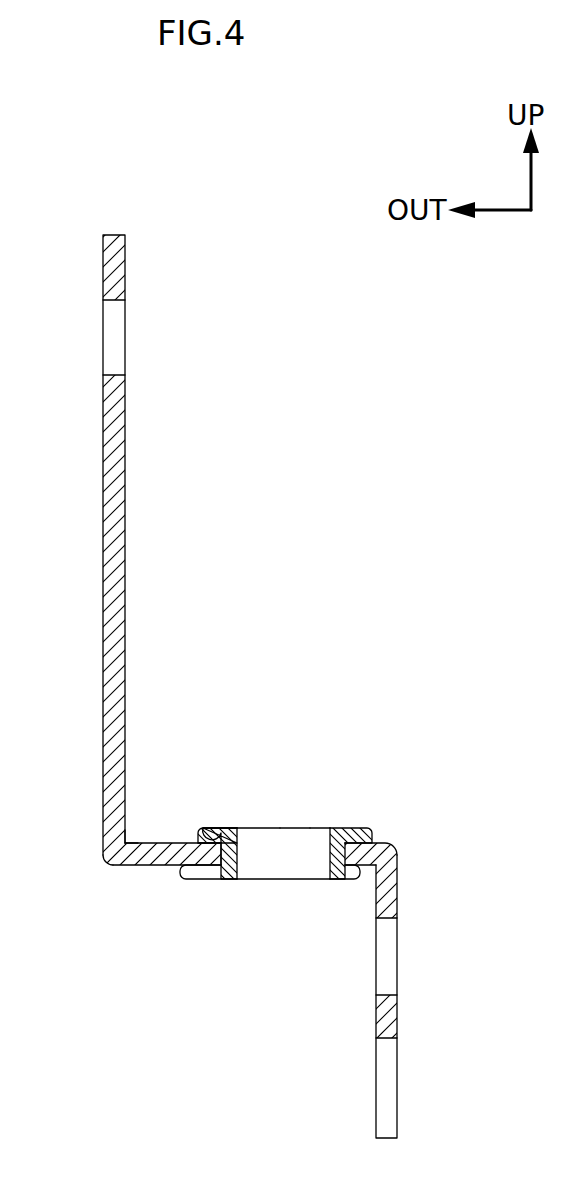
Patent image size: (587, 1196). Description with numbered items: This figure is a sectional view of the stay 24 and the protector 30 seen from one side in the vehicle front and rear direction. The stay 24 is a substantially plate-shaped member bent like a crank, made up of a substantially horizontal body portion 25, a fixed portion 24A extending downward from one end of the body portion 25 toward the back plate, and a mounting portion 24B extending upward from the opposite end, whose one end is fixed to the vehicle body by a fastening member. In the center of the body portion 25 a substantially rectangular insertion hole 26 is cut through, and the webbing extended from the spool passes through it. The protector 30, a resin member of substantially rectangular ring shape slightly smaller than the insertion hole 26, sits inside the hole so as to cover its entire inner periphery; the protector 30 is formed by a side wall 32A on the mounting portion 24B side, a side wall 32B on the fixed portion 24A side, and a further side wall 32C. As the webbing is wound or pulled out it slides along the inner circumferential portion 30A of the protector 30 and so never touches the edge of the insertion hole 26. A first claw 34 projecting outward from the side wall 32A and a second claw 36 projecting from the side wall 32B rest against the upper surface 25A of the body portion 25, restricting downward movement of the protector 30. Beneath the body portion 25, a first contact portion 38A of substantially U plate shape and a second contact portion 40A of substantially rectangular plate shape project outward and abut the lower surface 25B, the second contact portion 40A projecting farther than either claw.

The stay 24 is at (240, 295).
The fixed portion 24A is at (398, 1075).
The mounting portion 24B is at (125, 430).
The body portion 25 is at (108, 866).
The upper surface 25A is at (130, 842).
The lower surface 25B is at (143, 866).
The insertion hole 26 is at (228, 880).
The protector 30 is at (280, 770).
The inner circumferential portion 30A is at (246, 858).
The side wall 32A is at (253, 828).
The side wall 32B is at (315, 824).
The side wall 32C is at (292, 828).
The first claw 34 is at (211, 827).
The second claw 36 is at (372, 836).
The first contact portion 38A is at (355, 880).
The second contact portion 40A is at (182, 880).